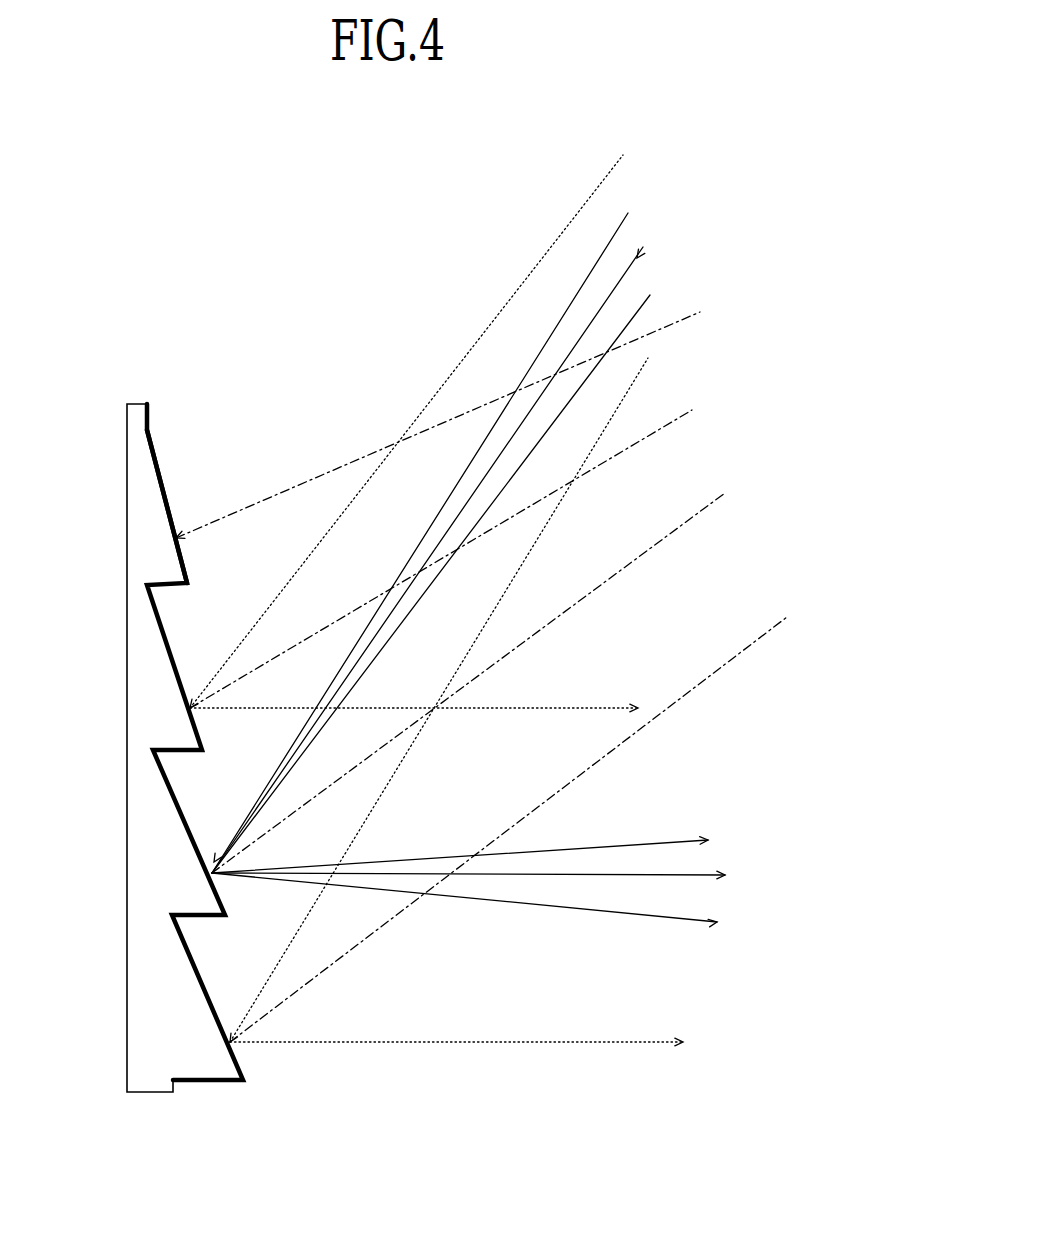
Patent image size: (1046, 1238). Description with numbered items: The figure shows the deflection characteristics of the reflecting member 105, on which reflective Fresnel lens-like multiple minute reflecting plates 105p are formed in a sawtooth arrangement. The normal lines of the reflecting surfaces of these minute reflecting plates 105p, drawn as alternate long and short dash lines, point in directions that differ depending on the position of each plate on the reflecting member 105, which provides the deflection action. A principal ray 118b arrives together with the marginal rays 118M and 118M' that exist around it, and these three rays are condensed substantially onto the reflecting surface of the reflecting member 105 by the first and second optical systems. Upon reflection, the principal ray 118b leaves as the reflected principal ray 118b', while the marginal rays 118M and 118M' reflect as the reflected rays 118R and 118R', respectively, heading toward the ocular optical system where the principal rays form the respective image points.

The reflecting member 105 is at (127, 502).
The minute reflecting plate 105p is at (163, 468).
The marginal ray 118M is at (420, 543).
The principal ray 118b is at (470, 519).
The marginal ray 118M' is at (488, 584).
The reflected marginal ray 118R' is at (475, 820).
The reflected principal ray 118b' is at (525, 866).
The reflected marginal ray 118R is at (467, 942).